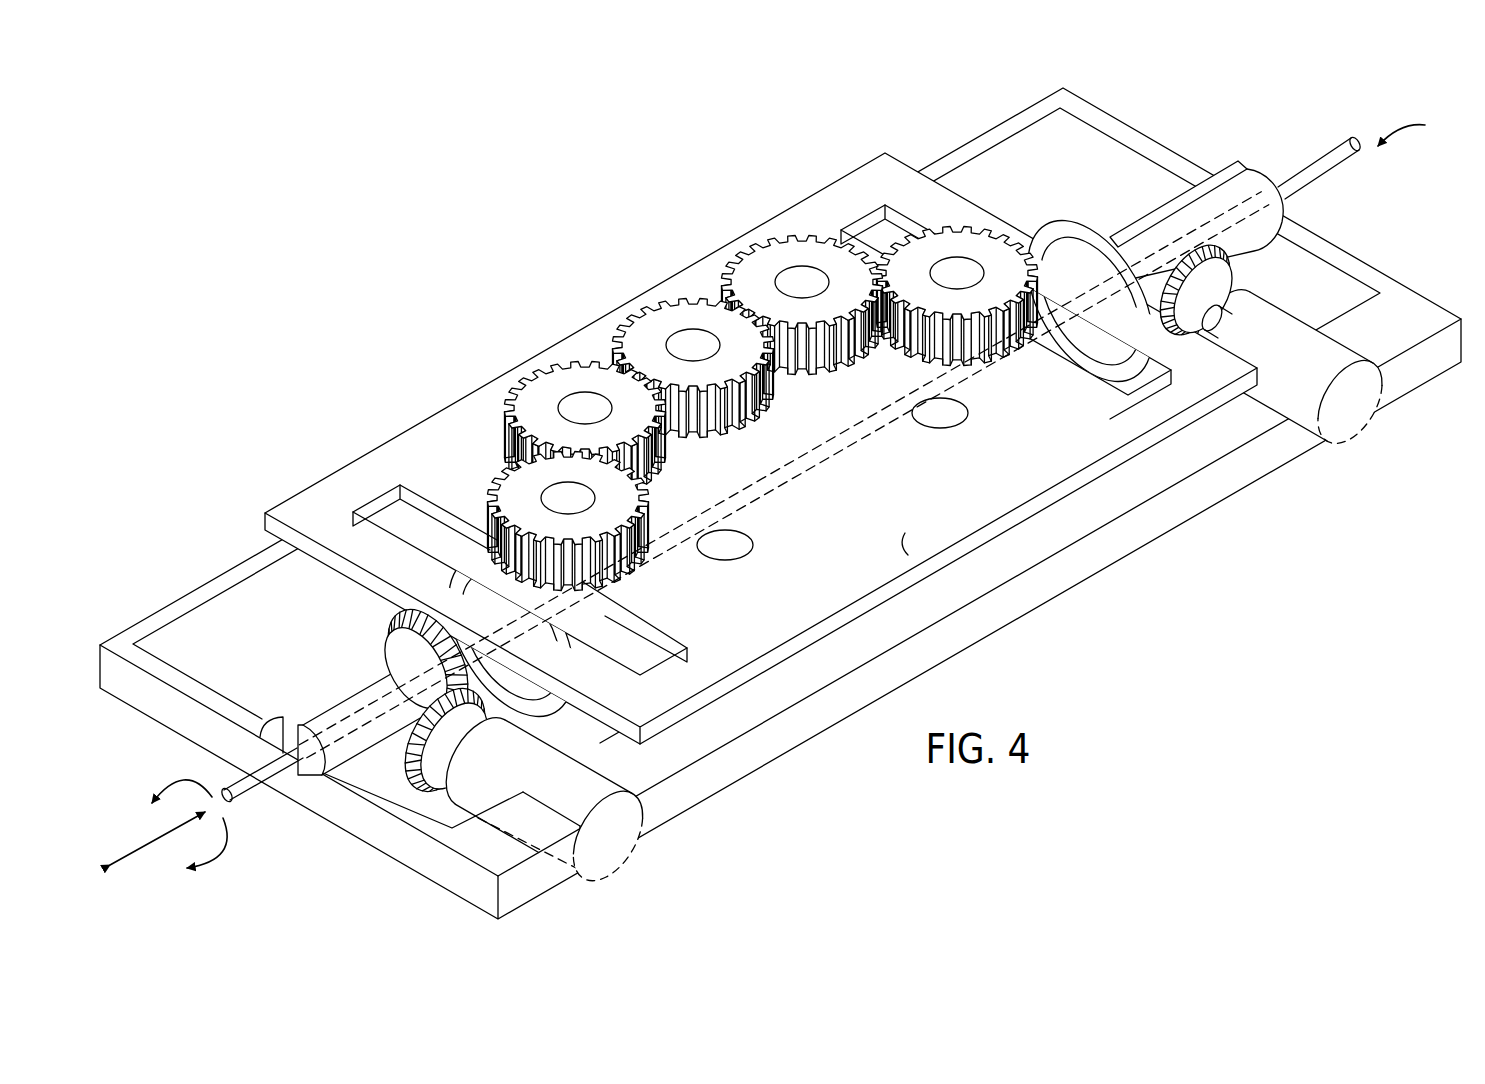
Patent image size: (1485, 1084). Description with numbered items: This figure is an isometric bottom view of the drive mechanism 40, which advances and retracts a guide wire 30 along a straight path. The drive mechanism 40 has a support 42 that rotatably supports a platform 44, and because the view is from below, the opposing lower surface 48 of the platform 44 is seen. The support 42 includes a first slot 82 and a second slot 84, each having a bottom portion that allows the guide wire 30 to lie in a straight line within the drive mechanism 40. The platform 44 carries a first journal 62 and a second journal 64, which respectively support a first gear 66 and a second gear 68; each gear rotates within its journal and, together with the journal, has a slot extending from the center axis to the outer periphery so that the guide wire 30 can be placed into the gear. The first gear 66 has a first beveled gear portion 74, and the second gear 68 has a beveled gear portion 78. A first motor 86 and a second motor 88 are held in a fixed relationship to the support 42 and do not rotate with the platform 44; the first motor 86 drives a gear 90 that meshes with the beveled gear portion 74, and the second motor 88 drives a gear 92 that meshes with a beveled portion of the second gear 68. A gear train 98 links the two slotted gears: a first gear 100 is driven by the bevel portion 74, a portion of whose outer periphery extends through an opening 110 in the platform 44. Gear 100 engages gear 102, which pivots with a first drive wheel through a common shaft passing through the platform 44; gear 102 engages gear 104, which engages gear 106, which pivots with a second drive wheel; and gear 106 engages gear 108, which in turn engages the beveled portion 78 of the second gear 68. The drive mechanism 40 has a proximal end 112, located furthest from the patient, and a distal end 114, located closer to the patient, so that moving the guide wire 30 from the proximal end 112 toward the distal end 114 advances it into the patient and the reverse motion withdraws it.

The guide wire 30 is at (1316, 177).
The drive mechanism 40 is at (785, 505).
The support 42 is at (1017, 134).
The platform 44 is at (761, 430).
The lower surface 48 is at (908, 555).
The first journal 62 is at (1070, 256).
The second journal 64 is at (492, 636).
The first gear 66 is at (1050, 343).
The second gear 68 is at (368, 633).
The first beveled gear portion 74 is at (1130, 234).
The beveled gear portion 78 is at (570, 615).
The first slot 82 is at (1194, 191).
The second slot 84 is at (292, 740).
The first motor 86 is at (1350, 413).
The second motor 88 is at (607, 838).
The gear 90 is at (1215, 278).
The gear 92 is at (445, 752).
The gear train 98 is at (673, 450).
The first gear 100 is at (988, 245).
The gear 102 is at (773, 258).
The gear 104 is at (657, 322).
The gear 106 is at (530, 398).
The gear 108 is at (510, 486).
The opening 110 is at (880, 232).
The proximal end 112 is at (1424, 130).
The distal end 114 is at (294, 842).